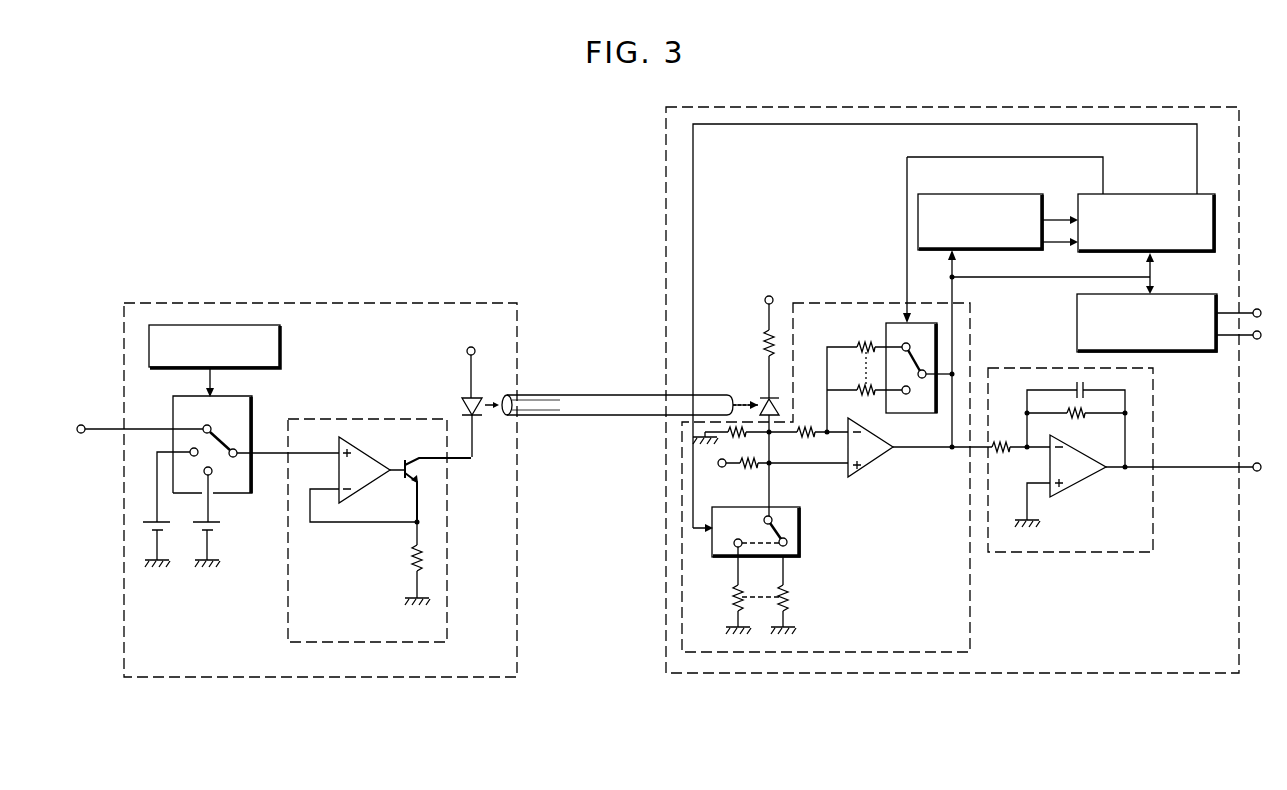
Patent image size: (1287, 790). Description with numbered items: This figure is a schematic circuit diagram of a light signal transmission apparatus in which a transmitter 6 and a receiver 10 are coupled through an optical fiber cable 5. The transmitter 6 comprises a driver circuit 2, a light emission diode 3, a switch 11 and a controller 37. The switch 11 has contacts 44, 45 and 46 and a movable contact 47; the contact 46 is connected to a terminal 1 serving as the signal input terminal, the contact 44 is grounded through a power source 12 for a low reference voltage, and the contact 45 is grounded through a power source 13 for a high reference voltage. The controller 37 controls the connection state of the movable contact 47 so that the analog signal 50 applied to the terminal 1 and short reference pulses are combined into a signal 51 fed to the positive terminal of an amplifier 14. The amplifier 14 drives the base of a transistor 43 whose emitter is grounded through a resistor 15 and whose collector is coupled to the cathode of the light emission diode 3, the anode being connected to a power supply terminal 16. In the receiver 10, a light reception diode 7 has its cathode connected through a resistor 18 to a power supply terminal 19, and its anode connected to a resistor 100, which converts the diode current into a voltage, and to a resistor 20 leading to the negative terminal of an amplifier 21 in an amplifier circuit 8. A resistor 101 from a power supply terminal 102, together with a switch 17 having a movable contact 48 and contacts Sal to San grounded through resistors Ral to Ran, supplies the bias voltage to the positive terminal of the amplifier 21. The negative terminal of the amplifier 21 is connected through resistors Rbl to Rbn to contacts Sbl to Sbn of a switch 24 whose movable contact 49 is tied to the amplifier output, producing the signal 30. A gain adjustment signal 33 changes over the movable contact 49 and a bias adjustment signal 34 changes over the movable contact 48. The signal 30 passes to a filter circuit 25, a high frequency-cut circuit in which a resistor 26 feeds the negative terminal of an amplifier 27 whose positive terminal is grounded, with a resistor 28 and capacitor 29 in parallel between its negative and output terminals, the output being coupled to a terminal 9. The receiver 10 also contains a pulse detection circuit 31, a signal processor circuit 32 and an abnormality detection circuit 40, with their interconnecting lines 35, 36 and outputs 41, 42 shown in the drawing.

The terminal 1 is at (81, 425).
The driver circuit 2 is at (354, 419).
The light emission diode 3 is at (463, 402).
The optical fiber cable 5 is at (587, 393).
The transmitter 6 is at (243, 303).
The light reception diode 7 is at (761, 400).
The amplifier circuit 8 is at (836, 303).
The terminal 9 is at (1257, 471).
The receiver 10 is at (666, 236).
The switch 11 is at (235, 407).
The power source 12 is at (170, 525).
The power source 13 is at (218, 524).
The amplifier 14 is at (362, 457).
The resistor 15 is at (414, 557).
The power supply terminal 16 is at (467, 351).
The switch 17 is at (802, 555).
The resistor 18 is at (762, 341).
The power supply terminal 19 is at (765, 299).
The resistor 20 is at (806, 427).
The amplifier 21 is at (877, 458).
The switch 24 is at (930, 347).
The filter circuit 25 is at (1060, 368).
The resistor 26 is at (1000, 452).
The amplifier 27 is at (1087, 477).
The resistor 28 is at (1078, 417).
The capacitor 29 is at (1090, 385).
The signal 30 is at (955, 290).
The pulse detection circuit 31 is at (985, 194).
The signal processor circuit 32 is at (1132, 192).
The gain adjustment signal 33 is at (905, 192).
The bias adjustment signal 34 is at (693, 178).
The signal line 35 is at (1054, 217).
The signal line 36 is at (1063, 243).
The controller 37 is at (281, 346).
The abnormality detection circuit 40 is at (1170, 294).
The output terminal 41 is at (1257, 309).
The output terminal 42 is at (1257, 339).
The transistor 43 is at (412, 477).
The contact 44 is at (192, 458).
The contact 45 is at (212, 477).
The contact 46 is at (205, 427).
The movable contact 47 is at (218, 437).
The movable contact 48 is at (780, 524).
The movable contact 49 is at (913, 365).
The analog signal 50 is at (112, 428).
The signal 51 is at (293, 453).
The resistor 100 is at (745, 437).
The resistor 101 is at (753, 470).
The power supply terminal 102 is at (718, 463).
The resistor Rbl is at (857, 344).
The resistor Rbn is at (872, 393).
The contact Sbl is at (887, 328).
The contact Sbn is at (910, 394).
The contact Sal is at (789, 543).
The contact San is at (734, 545).
The resistor Ral is at (790, 597).
The resistor Ran is at (735, 597).